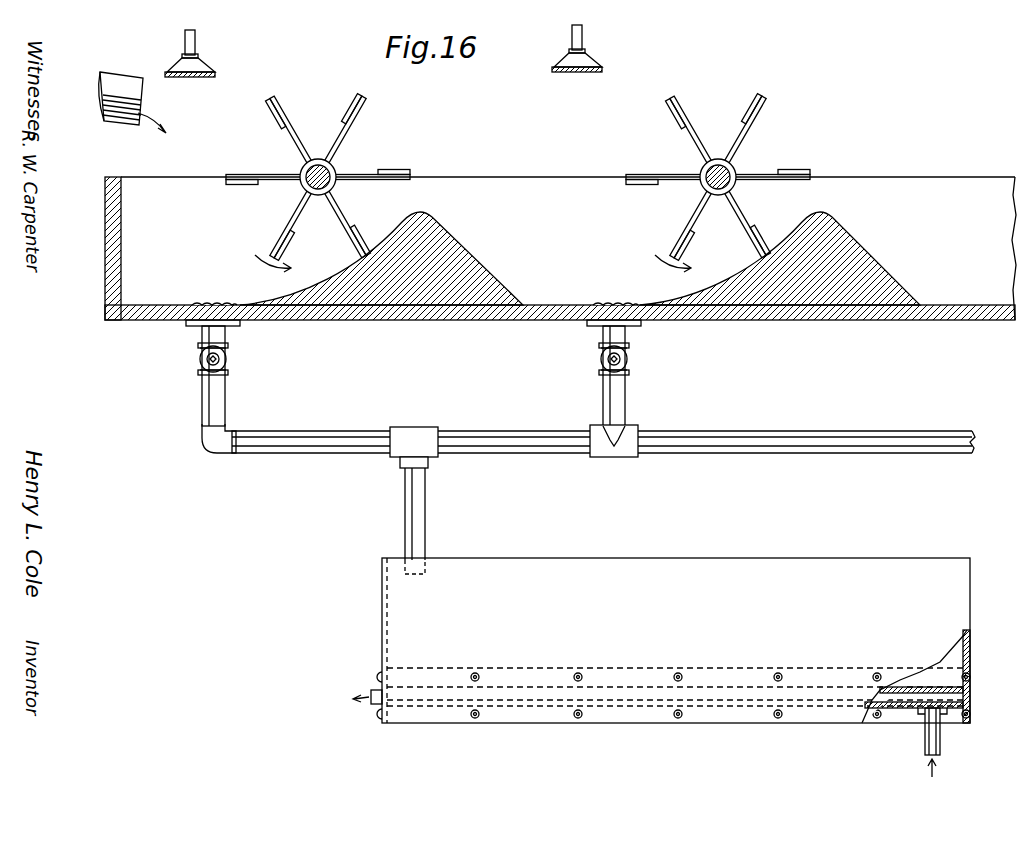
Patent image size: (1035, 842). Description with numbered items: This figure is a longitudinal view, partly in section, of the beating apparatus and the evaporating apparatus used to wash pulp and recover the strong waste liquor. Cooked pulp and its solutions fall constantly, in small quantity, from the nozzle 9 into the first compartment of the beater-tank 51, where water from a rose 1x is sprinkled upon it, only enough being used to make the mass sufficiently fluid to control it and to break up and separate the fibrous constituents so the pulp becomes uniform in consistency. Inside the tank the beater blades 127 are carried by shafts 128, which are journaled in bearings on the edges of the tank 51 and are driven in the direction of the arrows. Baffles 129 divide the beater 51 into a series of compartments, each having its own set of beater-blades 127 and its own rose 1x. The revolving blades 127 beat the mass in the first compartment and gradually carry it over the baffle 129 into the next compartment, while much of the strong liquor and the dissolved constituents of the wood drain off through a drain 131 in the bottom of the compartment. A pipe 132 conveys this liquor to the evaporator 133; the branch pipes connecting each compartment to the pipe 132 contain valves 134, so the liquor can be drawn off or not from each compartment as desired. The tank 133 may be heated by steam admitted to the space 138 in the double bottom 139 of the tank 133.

The water rose 1x is at (206, 62).
The discharge nozzle 9 is at (120, 125).
The beater-tank 51 is at (105, 243).
The beater blades 127 is at (347, 108).
The shafts 128 is at (334, 168).
The baffles 129 is at (466, 232).
The drain 131 is at (207, 305).
The pipe 132 is at (310, 422).
The evaporator 133 is at (661, 640).
The valves 134 is at (228, 359).
The steam space 138 is at (885, 695).
The double bottom 139 is at (912, 708).